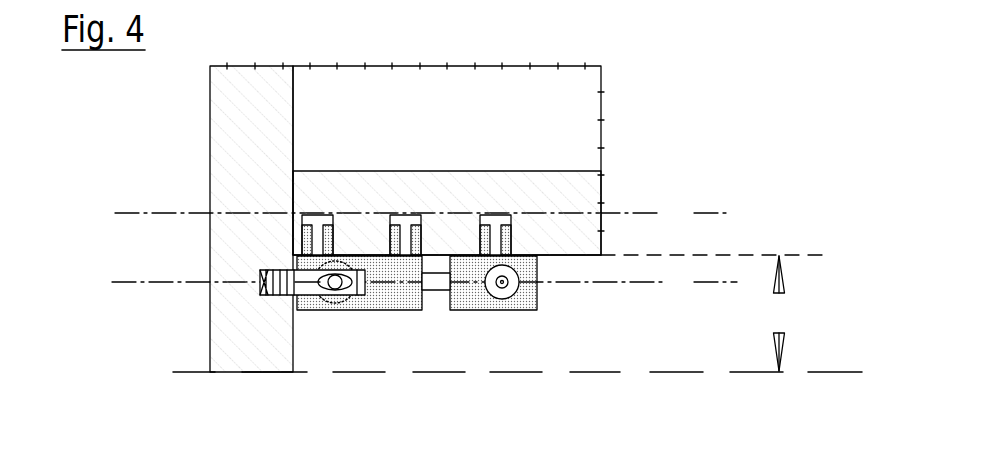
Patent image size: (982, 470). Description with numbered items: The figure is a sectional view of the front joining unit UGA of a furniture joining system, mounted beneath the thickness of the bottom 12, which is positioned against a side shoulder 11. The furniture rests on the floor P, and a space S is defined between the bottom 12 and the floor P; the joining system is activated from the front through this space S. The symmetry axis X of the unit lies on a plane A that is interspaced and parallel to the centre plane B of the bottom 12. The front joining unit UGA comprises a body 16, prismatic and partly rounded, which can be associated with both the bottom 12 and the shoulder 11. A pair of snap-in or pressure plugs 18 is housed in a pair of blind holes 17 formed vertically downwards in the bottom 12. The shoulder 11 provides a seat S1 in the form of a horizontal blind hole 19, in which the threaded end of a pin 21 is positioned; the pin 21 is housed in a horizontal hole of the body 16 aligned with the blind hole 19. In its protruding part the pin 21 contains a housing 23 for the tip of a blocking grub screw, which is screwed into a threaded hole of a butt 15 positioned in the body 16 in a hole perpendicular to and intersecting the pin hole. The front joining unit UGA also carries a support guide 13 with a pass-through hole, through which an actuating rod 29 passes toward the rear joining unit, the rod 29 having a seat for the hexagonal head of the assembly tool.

The side shoulder 11 is at (218, 205).
The bottom 12 is at (590, 192).
The support guide 13 is at (525, 312).
The butt 15 is at (341, 300).
The body 16 is at (398, 312).
The blind holes 17 is at (484, 215).
The snap-in or pressure plugs 18 is at (505, 217).
The horizontal blind hole 19 is at (262, 281).
The pin 21 is at (305, 288).
The housing 23 is at (327, 297).
The actuating rod 29 is at (437, 273).
The plane A is at (424, 283).
The centre plane B is at (422, 215).
The floor P is at (832, 372).
The space S is at (778, 313).
The seat S1 is at (262, 271).
The symmetry axis X is at (725, 283).
The front joining unit UGA is at (558, 298).